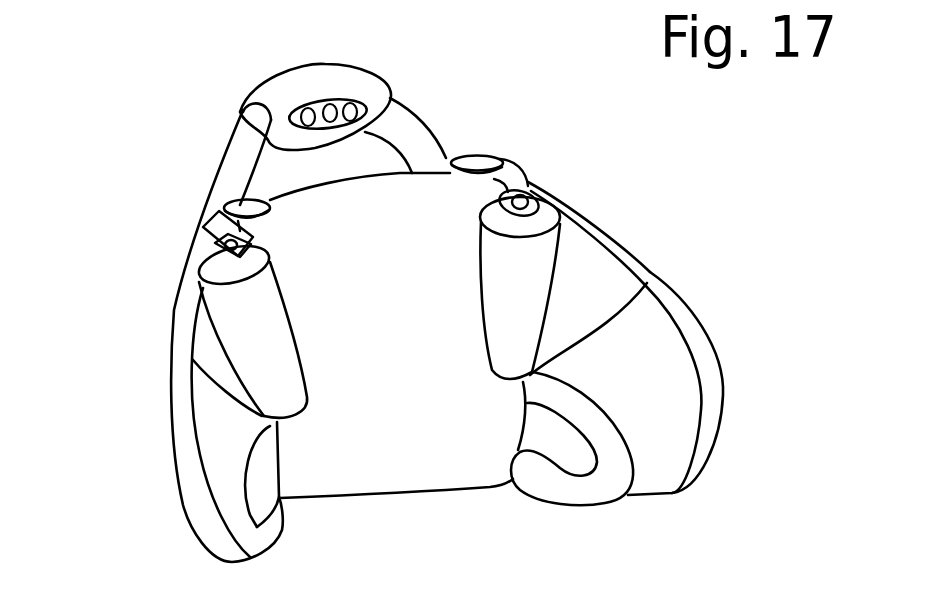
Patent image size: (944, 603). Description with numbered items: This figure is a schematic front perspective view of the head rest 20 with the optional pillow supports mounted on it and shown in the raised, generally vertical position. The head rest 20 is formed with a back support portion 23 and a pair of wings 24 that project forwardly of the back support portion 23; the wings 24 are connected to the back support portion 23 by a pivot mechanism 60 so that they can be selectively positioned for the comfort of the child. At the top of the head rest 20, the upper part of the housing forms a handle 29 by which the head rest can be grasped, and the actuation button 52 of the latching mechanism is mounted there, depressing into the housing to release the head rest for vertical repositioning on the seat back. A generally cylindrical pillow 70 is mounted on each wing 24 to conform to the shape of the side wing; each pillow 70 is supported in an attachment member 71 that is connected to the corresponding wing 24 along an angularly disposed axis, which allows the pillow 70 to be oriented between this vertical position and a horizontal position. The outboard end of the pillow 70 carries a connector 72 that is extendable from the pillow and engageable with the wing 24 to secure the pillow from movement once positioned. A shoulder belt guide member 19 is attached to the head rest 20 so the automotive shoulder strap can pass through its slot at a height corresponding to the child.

The head rest 20 is at (197, 70).
The handle 29 is at (350, 77).
The actuation button 52 is at (320, 107).
The pivot mechanism 60 is at (247, 210).
The connector 72 is at (222, 231).
The pillow 70 is at (252, 319).
The attachment member 71 is at (218, 366).
The wings 24 is at (218, 486).
The back support portion 23 is at (403, 453).
The shoulder belt guide member 19 is at (603, 497).